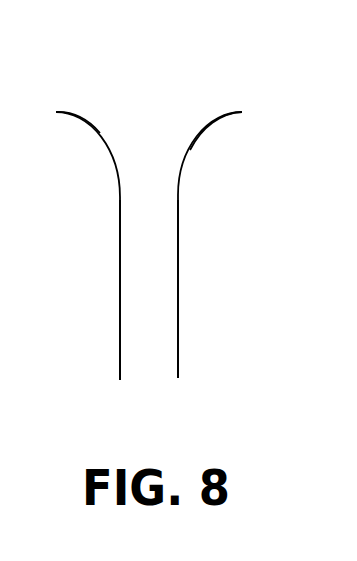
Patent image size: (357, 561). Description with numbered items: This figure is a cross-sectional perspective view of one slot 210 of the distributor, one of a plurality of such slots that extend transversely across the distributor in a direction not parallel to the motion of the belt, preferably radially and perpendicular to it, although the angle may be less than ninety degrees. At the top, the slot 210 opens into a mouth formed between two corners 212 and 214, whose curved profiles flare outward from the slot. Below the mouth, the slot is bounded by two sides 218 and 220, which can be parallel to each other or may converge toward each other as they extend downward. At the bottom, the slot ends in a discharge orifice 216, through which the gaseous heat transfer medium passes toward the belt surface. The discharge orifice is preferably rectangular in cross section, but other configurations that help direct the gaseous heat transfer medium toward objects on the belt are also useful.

The slot 210 is at (167, 158).
The corner 212 is at (77, 113).
The corner 214 is at (205, 125).
The discharge orifice 216 is at (150, 375).
The side 218 is at (120, 257).
The side 220 is at (178, 254).